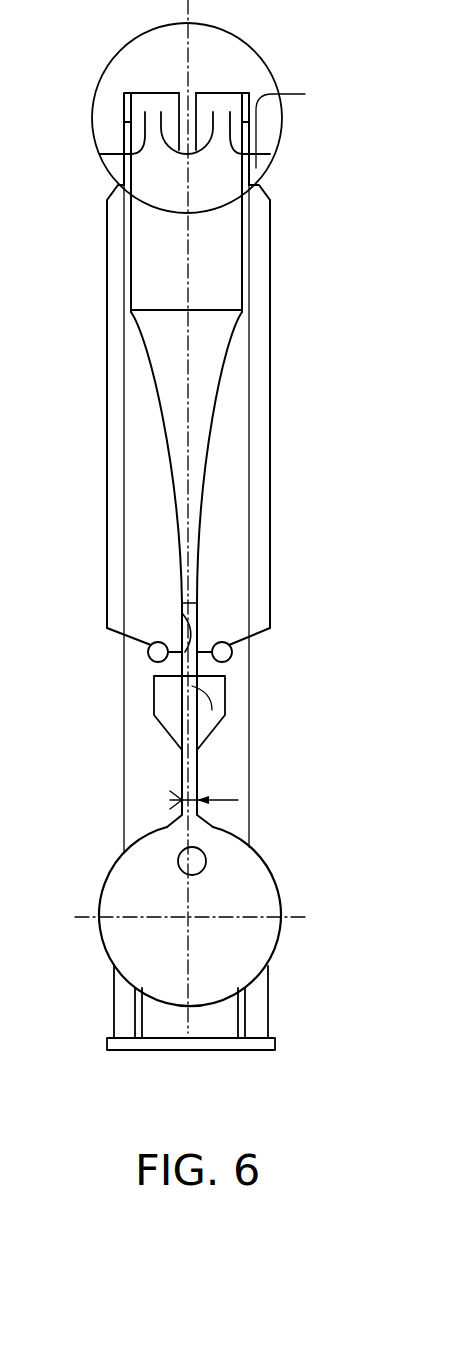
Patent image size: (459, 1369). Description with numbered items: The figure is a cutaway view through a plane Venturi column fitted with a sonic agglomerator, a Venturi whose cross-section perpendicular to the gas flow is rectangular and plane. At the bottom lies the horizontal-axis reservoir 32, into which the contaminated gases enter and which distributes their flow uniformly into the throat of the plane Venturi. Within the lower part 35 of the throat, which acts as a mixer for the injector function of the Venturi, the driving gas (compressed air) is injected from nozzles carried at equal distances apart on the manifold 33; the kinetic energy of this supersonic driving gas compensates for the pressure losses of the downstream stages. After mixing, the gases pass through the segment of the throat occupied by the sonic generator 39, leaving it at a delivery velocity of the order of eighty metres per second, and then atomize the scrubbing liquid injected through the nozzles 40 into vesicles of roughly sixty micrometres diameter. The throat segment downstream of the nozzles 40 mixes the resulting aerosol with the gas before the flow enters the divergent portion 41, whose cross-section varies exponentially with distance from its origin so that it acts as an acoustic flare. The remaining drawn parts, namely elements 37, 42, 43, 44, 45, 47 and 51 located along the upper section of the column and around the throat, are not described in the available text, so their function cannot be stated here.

The reservoir 32 is at (128, 930).
The manifold 33 is at (180, 863).
The lower part of the throat 35 is at (190, 787).
The housing 37 is at (170, 707).
The sonic generator 39 is at (154, 703).
The nozzles 40 is at (182, 612).
The divergent portion 41 is at (188, 460).
The tube 42 is at (187, 280).
The cap 43 is at (153, 148).
The fingers 44 is at (222, 93).
The spring clip 45 is at (314, 97).
The casing 47 is at (127, 190).
The pivots 51 is at (229, 660).